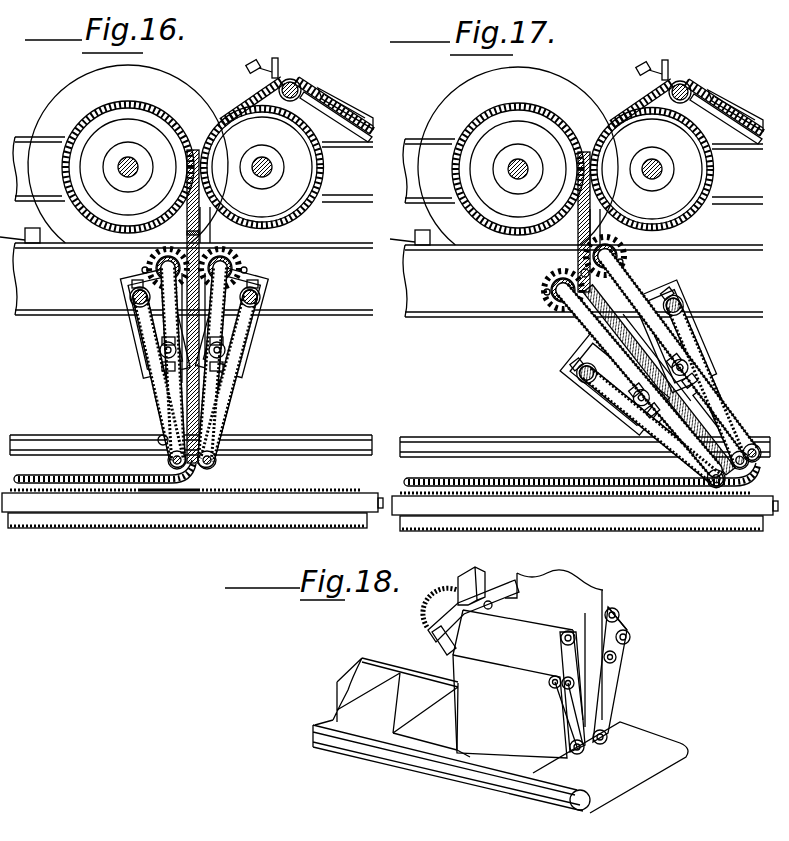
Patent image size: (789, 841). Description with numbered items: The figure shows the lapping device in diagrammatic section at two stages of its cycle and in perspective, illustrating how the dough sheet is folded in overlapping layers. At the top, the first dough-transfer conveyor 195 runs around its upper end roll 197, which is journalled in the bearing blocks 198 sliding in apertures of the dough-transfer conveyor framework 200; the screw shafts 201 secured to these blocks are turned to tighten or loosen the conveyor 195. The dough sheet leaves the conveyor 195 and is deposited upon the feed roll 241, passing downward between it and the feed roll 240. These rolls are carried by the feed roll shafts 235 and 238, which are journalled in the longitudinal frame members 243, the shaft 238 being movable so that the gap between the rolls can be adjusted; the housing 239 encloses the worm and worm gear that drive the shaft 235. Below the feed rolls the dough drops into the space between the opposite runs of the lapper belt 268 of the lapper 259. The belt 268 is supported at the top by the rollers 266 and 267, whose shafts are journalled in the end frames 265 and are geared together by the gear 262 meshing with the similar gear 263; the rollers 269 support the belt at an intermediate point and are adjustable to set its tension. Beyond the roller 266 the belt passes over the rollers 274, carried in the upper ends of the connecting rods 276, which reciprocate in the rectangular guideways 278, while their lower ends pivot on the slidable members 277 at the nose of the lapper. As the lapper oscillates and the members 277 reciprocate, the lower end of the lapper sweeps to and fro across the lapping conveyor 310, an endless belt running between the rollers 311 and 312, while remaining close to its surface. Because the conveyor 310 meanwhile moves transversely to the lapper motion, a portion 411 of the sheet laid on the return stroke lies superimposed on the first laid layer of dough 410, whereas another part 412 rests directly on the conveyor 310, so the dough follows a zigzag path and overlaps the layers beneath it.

In FIG. 16, the first dough-transfer conveyor 195 is at (342, 104).
In FIG. 17, the first dough-transfer conveyor 195 is at (740, 101).
In FIG. 16, the upper end roll 197 is at (293, 80).
In FIG. 17, the upper end roll 197 is at (696, 77).
In FIG. 16, the bearing blocks 198 is at (302, 91).
In FIG. 17, the bearing blocks 198 is at (726, 97).
In FIG. 16, the dough-transfer conveyor framework 200 is at (279, 56).
In FIG. 17, the dough-transfer conveyor framework 200 is at (667, 60).
In FIG. 16, the screw shafts 201 is at (251, 62).
In FIG. 17, the screw shafts 201 is at (636, 57).
In FIG. 16, the feed roll shaft 235 is at (128, 151).
In FIG. 17, the feed roll shaft 235 is at (518, 153).
In FIG. 16, the feed roll shaft 238 is at (264, 158).
In FIG. 17, the feed roll shaft 238 is at (652, 169).
In FIG. 16, the housing 239 is at (90, 80).
In FIG. 17, the housing 239 is at (518, 149).
In FIG. 16, the feed roll 240 is at (121, 107).
In FIG. 17, the feed roll 240 is at (518, 151).
In FIG. 16, the feed roll 241 is at (238, 101).
In FIG. 17, the feed roll 241 is at (679, 105).
In FIG. 16, the longitudinal frame members 243 is at (22, 136).
In FIG. 17, the longitudinal frame members 243 is at (578, 152).
In FIG. 16, the lapper 259 is at (183, 350).
In FIG. 18, the lapper 259 is at (626, 608).
In FIG. 16, the gear 262 is at (238, 264).
In FIG. 17, the gear 262 is at (626, 251).
In FIG. 18, the gear 262 is at (490, 580).
In FIG. 16, the gear 263 is at (150, 263).
In FIG. 17, the gear 263 is at (550, 279).
In FIG. 18, the gear 263 is at (430, 612).
In FIG. 18, the end frames 265 is at (430, 632).
In FIG. 16, the roller 266 is at (246, 271).
In FIG. 17, the roller 266 is at (623, 262).
In FIG. 18, the roller 266 is at (620, 616).
In FIG. 16, the roller 267 is at (143, 271).
In FIG. 17, the roller 267 is at (545, 290).
In FIG. 18, the roller 267 is at (561, 640).
In FIG. 16, the lapper belt 268 is at (150, 387).
In FIG. 17, the lapper belt 268 is at (625, 400).
In FIG. 18, the lapper belt 268 is at (622, 684).
In FIG. 16, the rollers 269 is at (160, 351).
In FIG. 17, the rollers 269 is at (612, 355).
In FIG. 18, the rollers 269 is at (617, 657).
In FIG. 16, the rollers 274 is at (130, 298).
In FIG. 17, the rollers 274 is at (596, 372).
In FIG. 18, the rollers 274 is at (631, 637).
In FIG. 16, the connecting rods 276 is at (150, 422).
In FIG. 17, the connecting rods 276 is at (645, 410).
In FIG. 16, the slidable members 277 is at (158, 440).
In FIG. 16, the rectangular guideways 278 is at (130, 329).
In FIG. 17, the rectangular guideways 278 is at (668, 293).
In FIG. 18, the rectangular guideways 278 is at (445, 645).
In FIG. 16, the lapping conveyor 310 is at (58, 529).
In FIG. 17, the lapping conveyor 310 is at (448, 532).
In FIG. 18, the lapping conveyor 310 is at (437, 772).
In FIG. 16, the roller 311 is at (104, 504).
In FIG. 17, the roller 311 is at (519, 507).
In FIG. 18, the roller 312 is at (585, 802).
In FIG. 16, the layer of dough 410 is at (298, 488).
In FIG. 16, the portion of the dough sheet 411 is at (132, 481).
In FIG. 17, the portion of the dough sheet 411 is at (558, 486).
In FIG. 18, the portion of the dough sheet 411 is at (415, 719).
In FIG. 16, the part of the dough sheet 412 is at (152, 490).
In FIG. 17, the part of the dough sheet 412 is at (640, 498).
In FIG. 18, the part of the dough sheet 412 is at (437, 745).